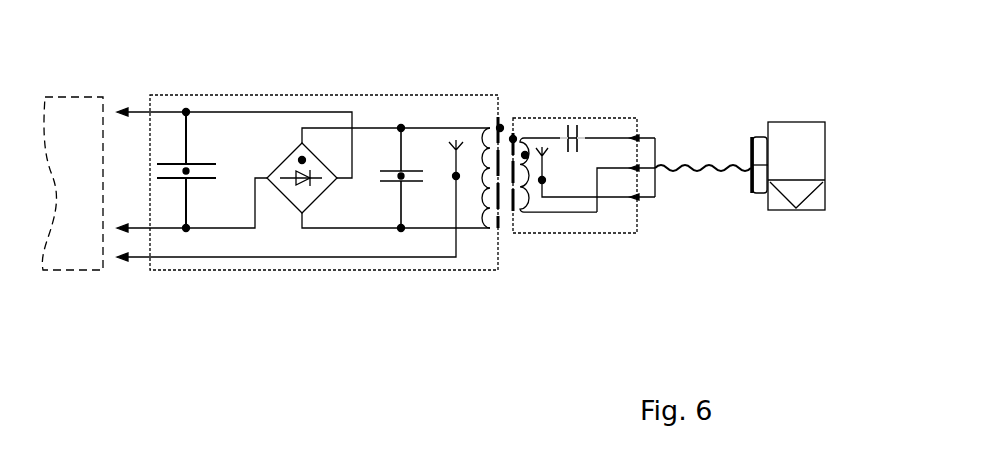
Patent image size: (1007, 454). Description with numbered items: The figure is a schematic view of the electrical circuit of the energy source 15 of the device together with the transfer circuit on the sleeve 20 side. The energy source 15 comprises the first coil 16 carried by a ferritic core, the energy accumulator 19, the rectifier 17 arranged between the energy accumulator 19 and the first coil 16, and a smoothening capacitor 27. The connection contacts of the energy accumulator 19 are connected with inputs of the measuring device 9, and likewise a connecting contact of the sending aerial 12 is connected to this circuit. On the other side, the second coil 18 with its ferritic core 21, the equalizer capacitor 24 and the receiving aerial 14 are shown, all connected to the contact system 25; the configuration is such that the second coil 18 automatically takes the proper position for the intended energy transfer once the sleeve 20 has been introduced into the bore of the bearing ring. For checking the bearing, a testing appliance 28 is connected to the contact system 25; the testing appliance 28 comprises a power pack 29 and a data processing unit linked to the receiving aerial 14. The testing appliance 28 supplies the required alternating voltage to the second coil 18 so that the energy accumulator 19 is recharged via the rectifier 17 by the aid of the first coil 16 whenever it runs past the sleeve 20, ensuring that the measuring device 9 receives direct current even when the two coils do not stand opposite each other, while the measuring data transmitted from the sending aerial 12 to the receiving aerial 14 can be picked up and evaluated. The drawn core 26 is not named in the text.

The measuring device 9 is at (72, 115).
The sending aerial 12 is at (456, 177).
The receiving aerial 14 is at (542, 182).
The energy source 15 is at (329, 278).
The first coil 16 is at (500, 127).
The rectifier 17 is at (303, 158).
The second coil 18 is at (530, 150).
The energy accumulator 19 is at (187, 166).
The sleeve 20 is at (562, 240).
The ferritic core 21 is at (525, 154).
The equalizer capacitor 24 is at (581, 134).
The contact system 25 is at (641, 188).
The transformer core 26 is at (513, 138).
The smoothening capacitor 27 is at (402, 174).
The testing appliance 28 is at (756, 125).
The power pack 29 is at (798, 137).